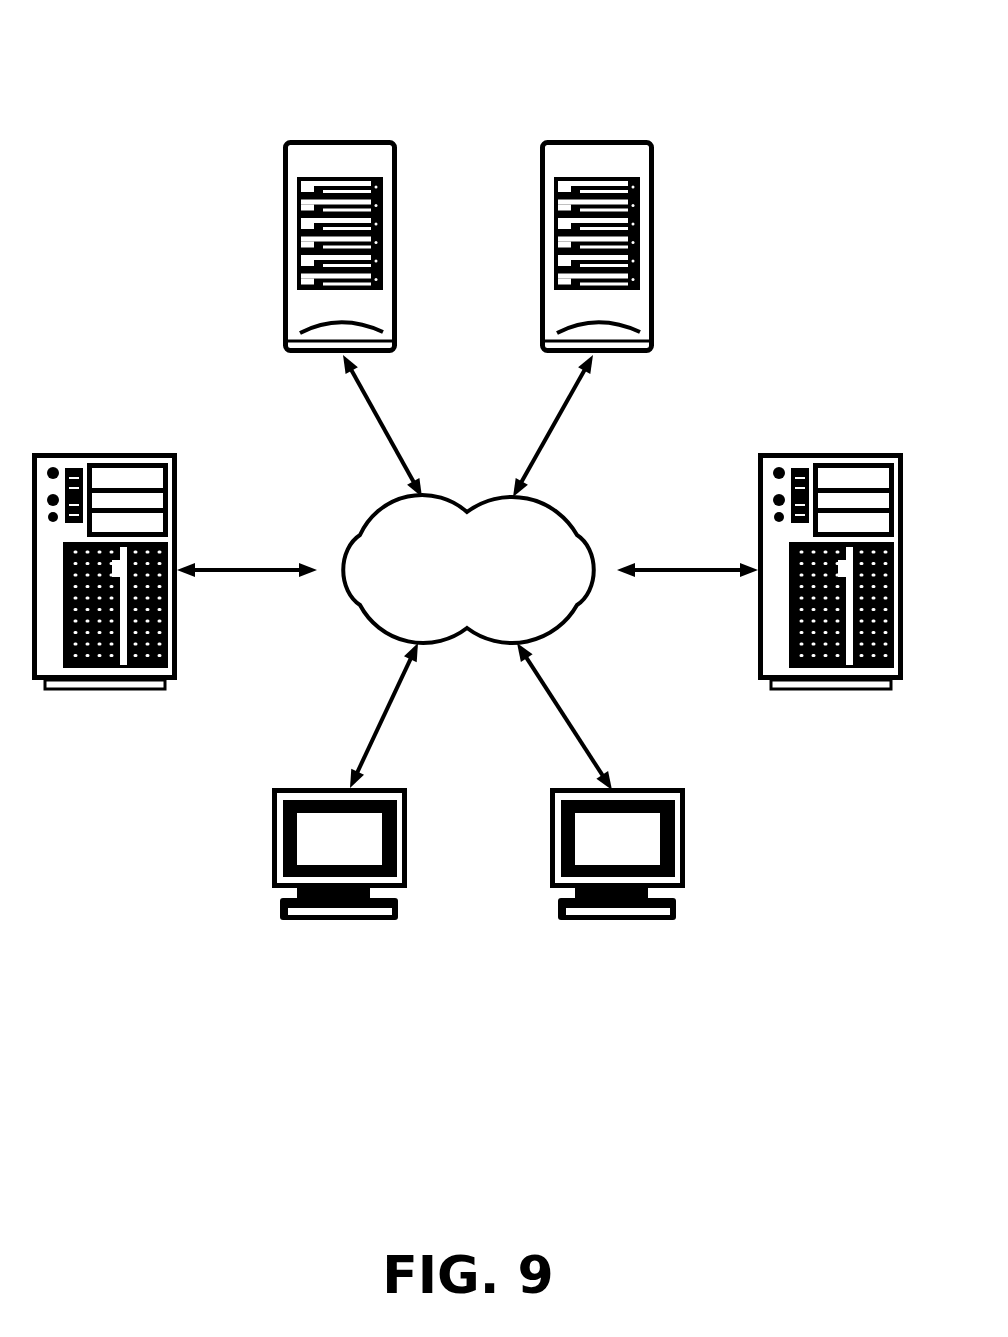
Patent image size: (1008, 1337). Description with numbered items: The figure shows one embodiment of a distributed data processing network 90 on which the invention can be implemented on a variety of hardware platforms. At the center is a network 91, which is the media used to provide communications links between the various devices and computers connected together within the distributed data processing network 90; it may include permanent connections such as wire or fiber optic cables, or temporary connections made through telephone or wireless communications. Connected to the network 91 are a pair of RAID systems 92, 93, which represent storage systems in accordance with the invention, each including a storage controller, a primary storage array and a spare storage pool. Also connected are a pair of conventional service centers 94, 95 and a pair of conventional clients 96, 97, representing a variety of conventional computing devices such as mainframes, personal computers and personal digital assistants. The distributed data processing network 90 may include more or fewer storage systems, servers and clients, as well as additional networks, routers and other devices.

The distributed data processing network 90 is at (207, 72).
The network 91 is at (455, 600).
The RAID system 92 is at (337, 140).
The RAID system 93 is at (594, 140).
The service center 94 is at (98, 453).
The service center 95 is at (826, 453).
The client 96 is at (340, 920).
The client 97 is at (618, 920).